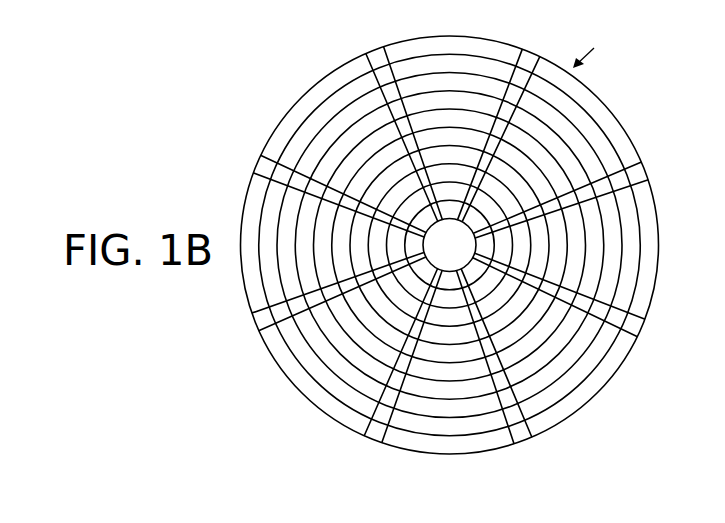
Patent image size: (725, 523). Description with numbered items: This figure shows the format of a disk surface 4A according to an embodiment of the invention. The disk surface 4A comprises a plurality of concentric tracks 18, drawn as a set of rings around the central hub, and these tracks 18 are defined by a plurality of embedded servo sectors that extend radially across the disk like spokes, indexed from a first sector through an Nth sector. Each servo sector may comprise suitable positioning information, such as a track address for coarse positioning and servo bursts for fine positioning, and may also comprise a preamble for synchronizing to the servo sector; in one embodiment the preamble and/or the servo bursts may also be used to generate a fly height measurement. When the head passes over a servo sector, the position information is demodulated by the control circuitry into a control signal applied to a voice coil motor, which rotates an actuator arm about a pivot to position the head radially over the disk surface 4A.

The tracks 18 is at (478, 70).
The disk surface 4A is at (593, 49).